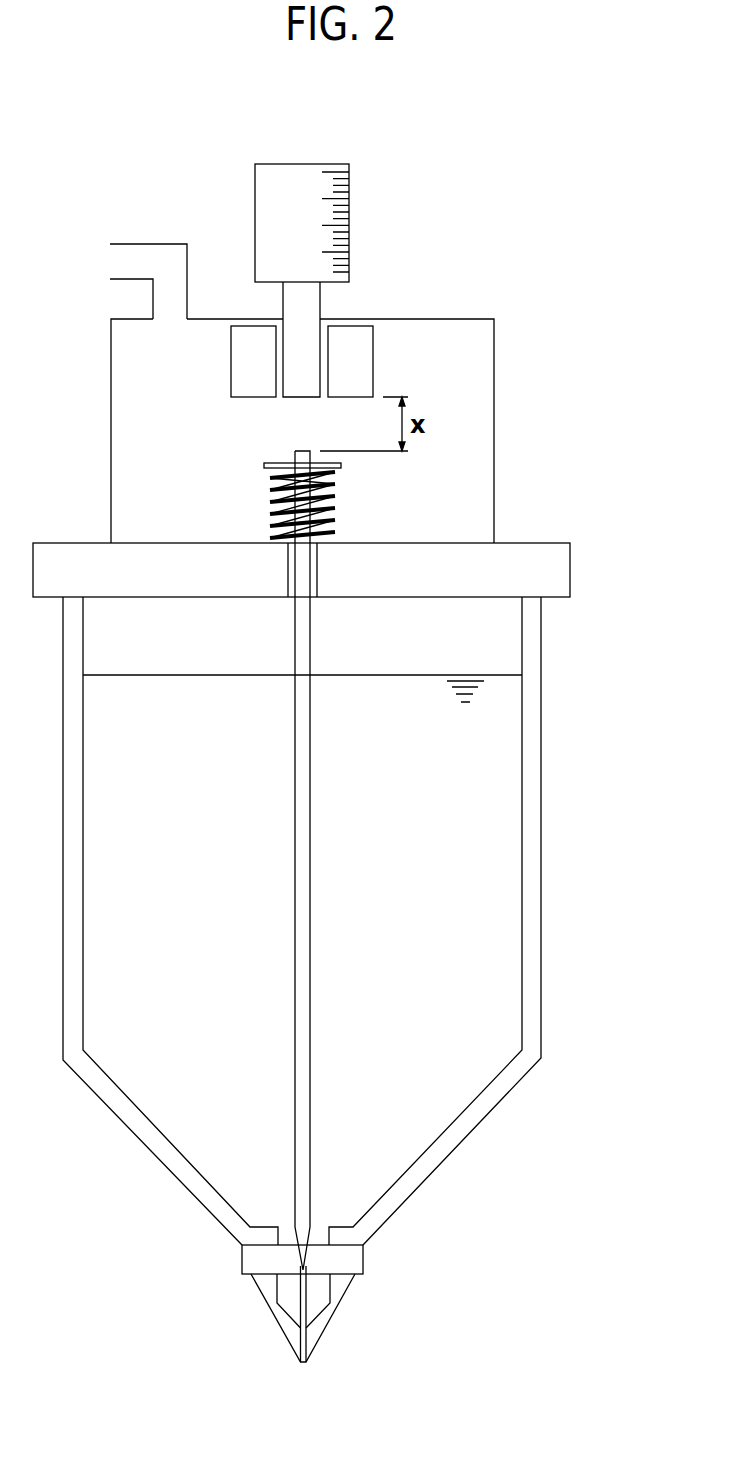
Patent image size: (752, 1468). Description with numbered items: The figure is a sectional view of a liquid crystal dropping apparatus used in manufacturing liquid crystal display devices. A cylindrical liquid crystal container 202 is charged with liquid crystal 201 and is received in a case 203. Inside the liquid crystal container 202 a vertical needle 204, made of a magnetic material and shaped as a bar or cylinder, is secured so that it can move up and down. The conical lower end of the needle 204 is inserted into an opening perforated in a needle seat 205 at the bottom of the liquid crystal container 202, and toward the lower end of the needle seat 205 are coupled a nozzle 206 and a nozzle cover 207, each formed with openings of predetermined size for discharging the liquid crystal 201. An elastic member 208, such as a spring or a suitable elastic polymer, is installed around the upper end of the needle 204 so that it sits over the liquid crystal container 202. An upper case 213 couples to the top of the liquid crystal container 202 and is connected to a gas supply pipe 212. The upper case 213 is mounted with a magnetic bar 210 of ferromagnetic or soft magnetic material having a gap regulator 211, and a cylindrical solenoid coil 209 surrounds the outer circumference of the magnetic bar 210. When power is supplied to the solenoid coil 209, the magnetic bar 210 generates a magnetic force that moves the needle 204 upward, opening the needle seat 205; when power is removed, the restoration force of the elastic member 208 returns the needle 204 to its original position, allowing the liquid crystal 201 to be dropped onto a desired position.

The liquid crystal 201 is at (498, 713).
The liquid crystal container 202 is at (523, 782).
The case 203 is at (542, 930).
The needle 204 is at (303, 800).
The needle seat 205 is at (352, 1260).
The nozzle 206 is at (318, 1290).
The nozzle cover 207 is at (317, 1332).
The elastic member 208 is at (322, 502).
The solenoid coil 209 is at (364, 365).
The magnetic bar 210 is at (308, 298).
The gap regulator 211 is at (299, 164).
The gas supply pipe 212 is at (146, 244).
The upper case 213 is at (494, 429).